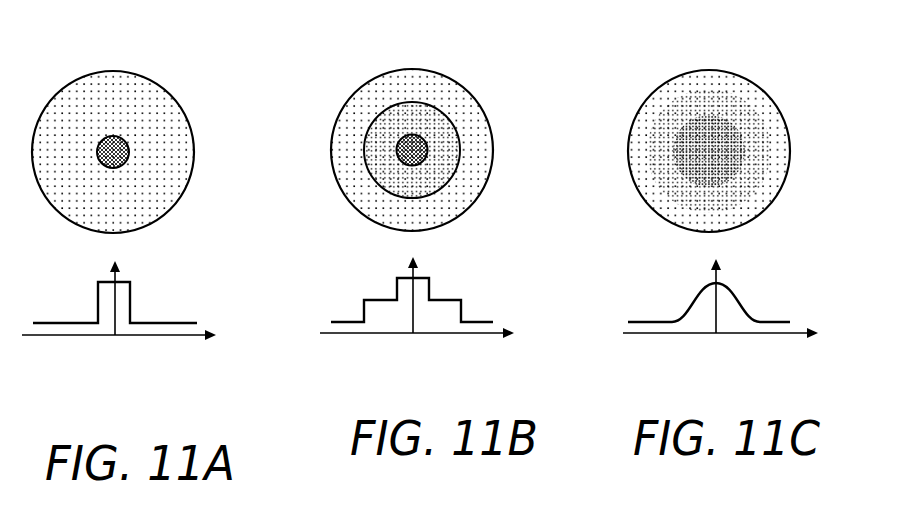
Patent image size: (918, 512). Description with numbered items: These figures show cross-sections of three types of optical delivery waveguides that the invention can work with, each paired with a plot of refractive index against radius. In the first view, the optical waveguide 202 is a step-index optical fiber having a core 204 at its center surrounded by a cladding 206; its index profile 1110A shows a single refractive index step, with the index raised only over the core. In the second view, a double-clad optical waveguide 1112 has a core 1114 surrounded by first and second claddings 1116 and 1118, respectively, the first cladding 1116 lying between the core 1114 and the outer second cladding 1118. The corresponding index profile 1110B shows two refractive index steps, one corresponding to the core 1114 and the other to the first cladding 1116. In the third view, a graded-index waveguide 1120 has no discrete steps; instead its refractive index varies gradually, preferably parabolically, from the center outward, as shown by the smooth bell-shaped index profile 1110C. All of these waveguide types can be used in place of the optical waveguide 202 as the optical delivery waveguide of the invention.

In FIG. 11A, the optical waveguide 202 is at (142, 143).
In FIG. 11A, the core 204 is at (112, 138).
In FIG. 11A, the cladding 206 is at (148, 94).
In FIG. 11A, the index profile 1110A is at (229, 294).
In FIG. 11B, the double-clad optical waveguide 1112 is at (413, 141).
In FIG. 11B, the core 1114 is at (411, 136).
In FIG. 11B, the first cladding 1116 is at (383, 132).
In FIG. 11B, the second cladding 1118 is at (347, 167).
In FIG. 11B, the index profile 1110B is at (534, 292).
In FIG. 11C, the graded-index waveguide 1120 is at (657, 48).
In FIG. 11C, the index profile 1110C is at (829, 293).